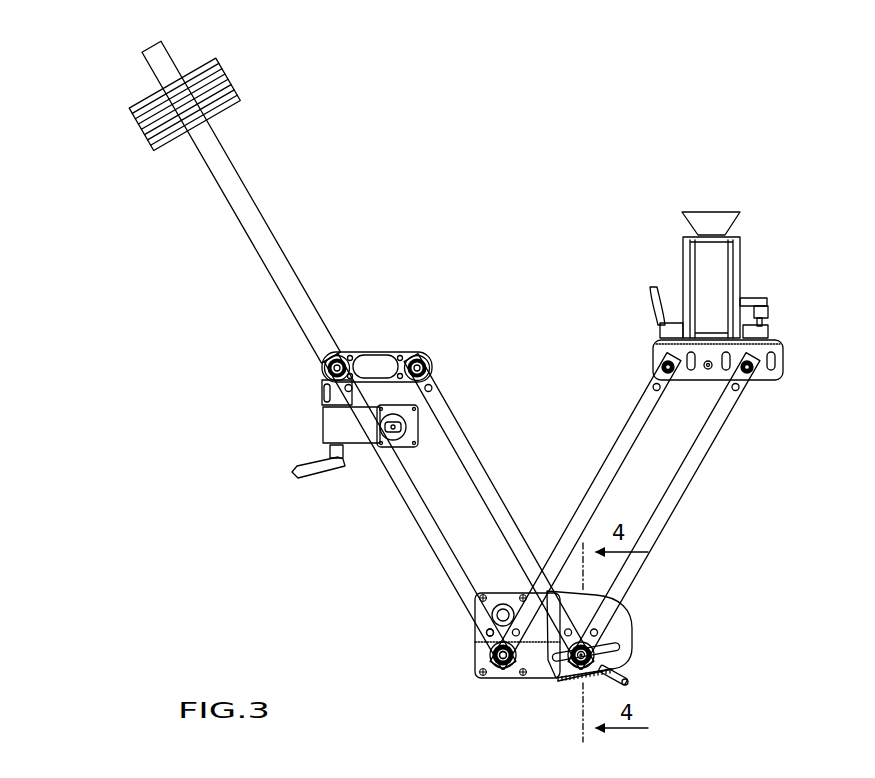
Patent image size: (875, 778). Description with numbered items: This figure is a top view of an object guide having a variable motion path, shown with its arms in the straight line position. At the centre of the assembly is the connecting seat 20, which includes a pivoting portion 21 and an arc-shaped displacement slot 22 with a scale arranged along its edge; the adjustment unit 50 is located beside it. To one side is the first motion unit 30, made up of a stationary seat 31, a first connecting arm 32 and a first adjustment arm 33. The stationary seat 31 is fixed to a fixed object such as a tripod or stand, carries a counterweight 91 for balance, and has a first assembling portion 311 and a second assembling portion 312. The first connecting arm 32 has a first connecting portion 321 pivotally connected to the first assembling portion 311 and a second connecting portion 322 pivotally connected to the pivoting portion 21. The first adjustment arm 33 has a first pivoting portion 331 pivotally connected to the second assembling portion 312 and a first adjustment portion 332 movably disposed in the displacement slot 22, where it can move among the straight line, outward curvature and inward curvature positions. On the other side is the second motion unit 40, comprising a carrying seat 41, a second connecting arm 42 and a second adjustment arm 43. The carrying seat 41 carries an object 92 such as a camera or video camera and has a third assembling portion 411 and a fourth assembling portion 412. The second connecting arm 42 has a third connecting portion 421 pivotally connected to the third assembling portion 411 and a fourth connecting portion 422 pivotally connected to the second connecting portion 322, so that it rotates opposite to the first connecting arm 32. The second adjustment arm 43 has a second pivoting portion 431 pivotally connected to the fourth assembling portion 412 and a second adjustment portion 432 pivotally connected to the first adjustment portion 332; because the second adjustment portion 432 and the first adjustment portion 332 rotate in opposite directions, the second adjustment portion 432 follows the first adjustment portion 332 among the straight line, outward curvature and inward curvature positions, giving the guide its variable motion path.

The counterweight 91 is at (243, 192).
The object 92 is at (727, 275).
The connecting seat 20 is at (533, 680).
The pivoting portion 21 is at (500, 665).
The displacement slot 22 is at (628, 634).
The first motion unit 30 is at (424, 480).
The stationary seat 31 is at (377, 352).
The first assembling portion 311 is at (323, 366).
The second assembling portion 312 is at (427, 355).
The first connecting arm 32 is at (403, 485).
The first connecting portion 321 is at (334, 352).
The second connecting portion 322 is at (485, 642).
The first adjustment arm 33 is at (470, 458).
The first pivoting portion 331 is at (433, 371).
The first adjustment portion 332 is at (559, 679).
The second motion unit 40 is at (675, 488).
The carrying seat 41 is at (755, 350).
The third assembling portion 411 is at (660, 367).
The fourth assembling portion 412 is at (768, 367).
The second connecting arm 42 is at (615, 440).
The third connecting portion 421 is at (655, 389).
The fourth connecting portion 422 is at (495, 652).
The second adjustment arm 43 is at (705, 511).
The second pivoting portion 431 is at (748, 390).
The second adjustment portion 432 is at (633, 649).
The adjustment unit 50 is at (650, 683).